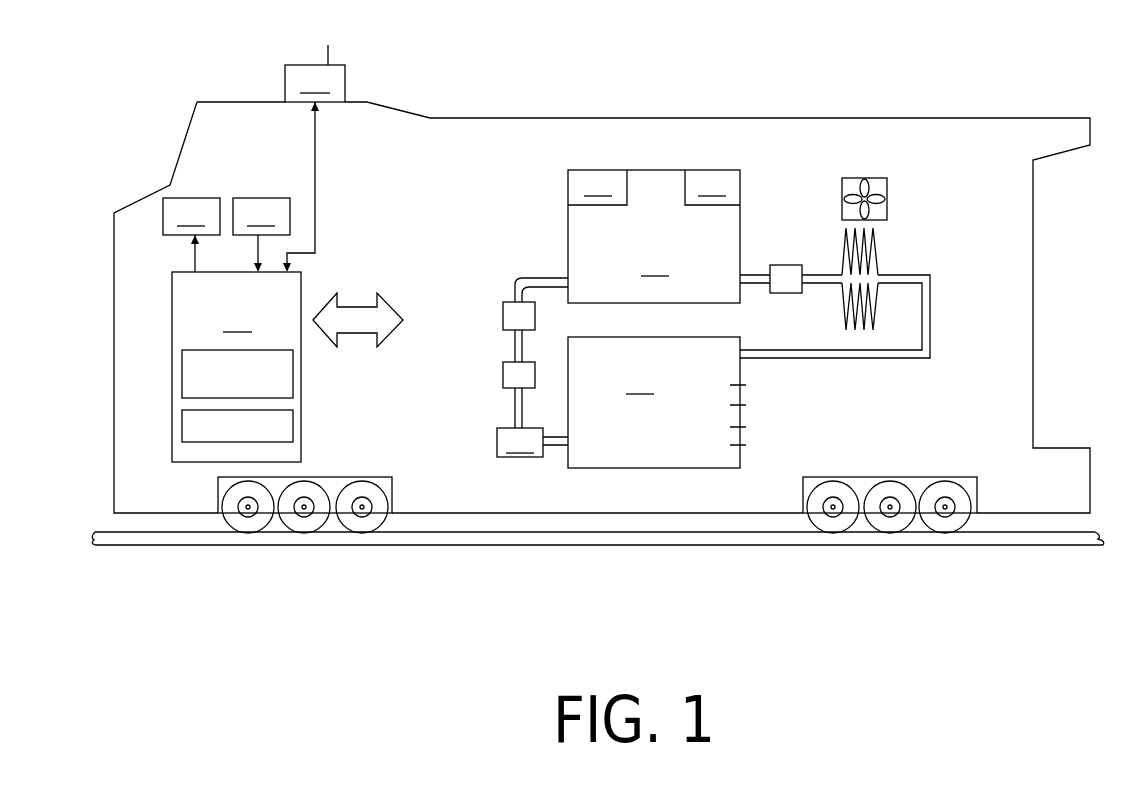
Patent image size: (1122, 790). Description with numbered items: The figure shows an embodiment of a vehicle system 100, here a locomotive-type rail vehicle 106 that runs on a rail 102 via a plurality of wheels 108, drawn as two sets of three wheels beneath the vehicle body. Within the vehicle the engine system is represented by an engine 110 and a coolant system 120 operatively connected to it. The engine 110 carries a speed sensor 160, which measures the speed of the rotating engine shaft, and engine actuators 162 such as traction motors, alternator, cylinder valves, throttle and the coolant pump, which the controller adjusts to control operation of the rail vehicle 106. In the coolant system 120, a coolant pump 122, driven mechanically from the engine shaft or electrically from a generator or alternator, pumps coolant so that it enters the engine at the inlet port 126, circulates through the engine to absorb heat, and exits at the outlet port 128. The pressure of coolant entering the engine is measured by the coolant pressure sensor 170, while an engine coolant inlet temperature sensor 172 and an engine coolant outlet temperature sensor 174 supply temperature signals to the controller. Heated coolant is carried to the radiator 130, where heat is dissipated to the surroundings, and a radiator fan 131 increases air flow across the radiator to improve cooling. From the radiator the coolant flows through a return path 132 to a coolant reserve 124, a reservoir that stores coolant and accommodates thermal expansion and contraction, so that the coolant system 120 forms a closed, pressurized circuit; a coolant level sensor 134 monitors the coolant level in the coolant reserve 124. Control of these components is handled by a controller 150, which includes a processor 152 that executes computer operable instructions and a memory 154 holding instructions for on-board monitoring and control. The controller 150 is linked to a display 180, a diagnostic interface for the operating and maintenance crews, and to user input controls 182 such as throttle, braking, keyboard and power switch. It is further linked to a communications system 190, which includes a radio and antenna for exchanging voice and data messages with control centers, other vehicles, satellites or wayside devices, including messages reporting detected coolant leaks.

The vehicle system 100 is at (954, 72).
The rail 102 is at (1027, 545).
The rail vehicle 106 is at (832, 118).
The wheels 108 is at (380, 495).
The engine 110 is at (654, 236).
The coolant system 120 is at (502, 348).
The coolant pump 122 is at (485, 413).
The coolant reserve 124 is at (654, 402).
The inlet port 126 is at (568, 278).
The outlet port 128 is at (740, 272).
The radiator 130 is at (893, 240).
The radiator fan 131 is at (873, 178).
The return path 132 is at (868, 358).
The coolant level sensor 134 is at (743, 381).
The controller 150 is at (234, 367).
The processor 152 is at (187, 373).
The memory 154 is at (293, 415).
The speed sensor 160 is at (597, 187).
The engine actuators 162 is at (712, 187).
The coolant pressure sensor 170 is at (503, 372).
The engine coolant inlet temperature sensor 172 is at (503, 315).
The engine coolant outlet temperature sensor 174 is at (797, 293).
The display 180 is at (191, 235).
The user input controls 182 is at (261, 235).
The communications system 190 is at (314, 168).